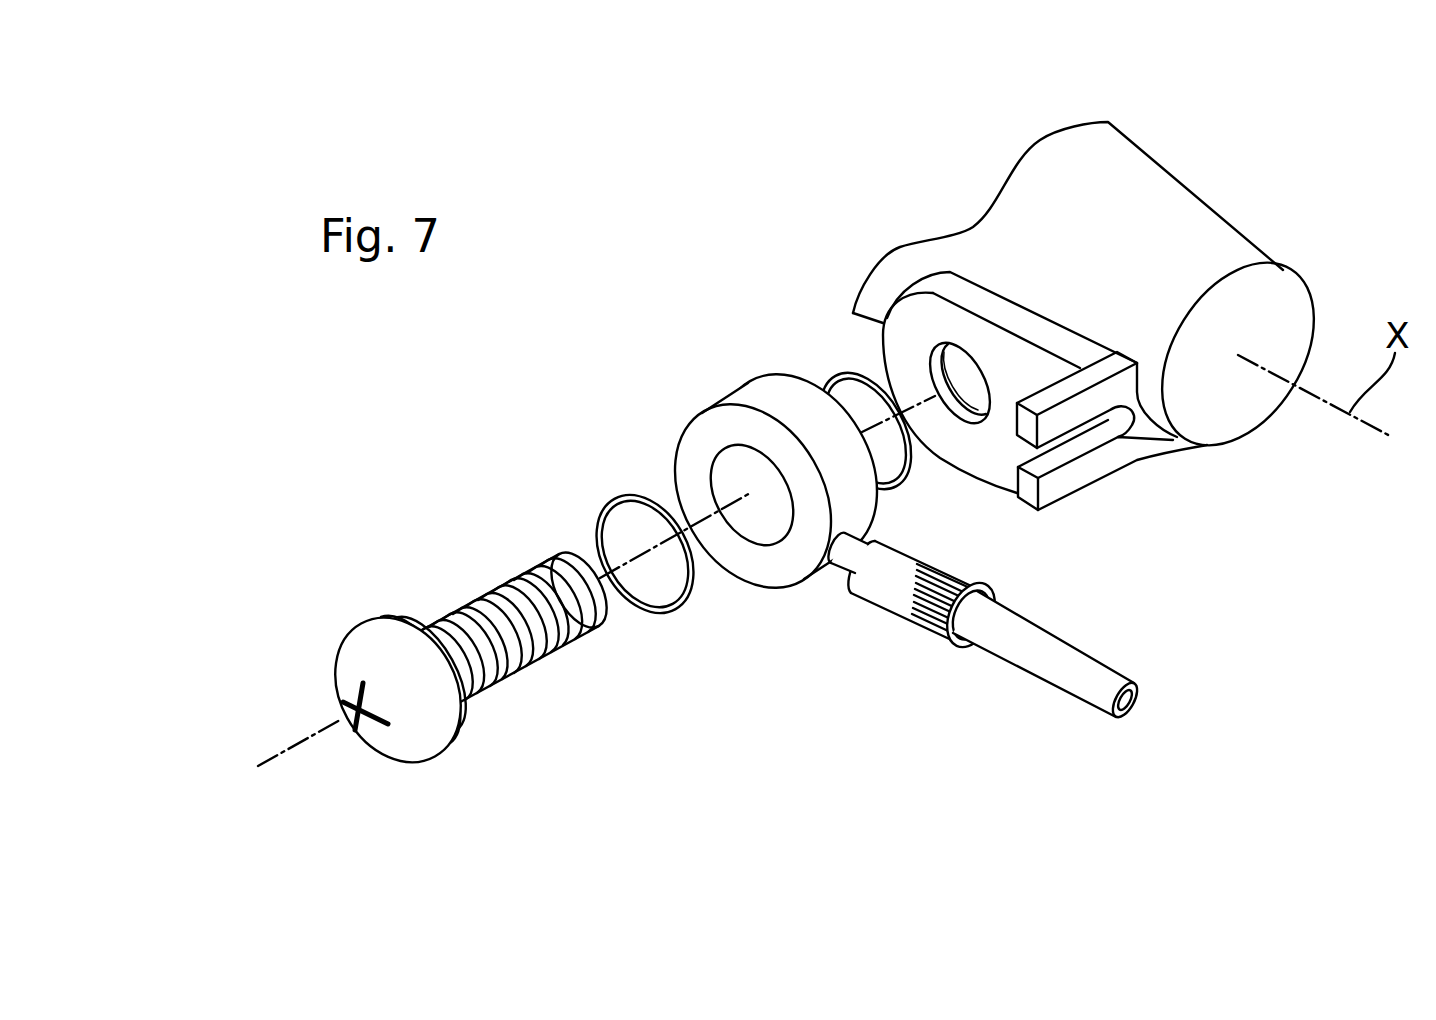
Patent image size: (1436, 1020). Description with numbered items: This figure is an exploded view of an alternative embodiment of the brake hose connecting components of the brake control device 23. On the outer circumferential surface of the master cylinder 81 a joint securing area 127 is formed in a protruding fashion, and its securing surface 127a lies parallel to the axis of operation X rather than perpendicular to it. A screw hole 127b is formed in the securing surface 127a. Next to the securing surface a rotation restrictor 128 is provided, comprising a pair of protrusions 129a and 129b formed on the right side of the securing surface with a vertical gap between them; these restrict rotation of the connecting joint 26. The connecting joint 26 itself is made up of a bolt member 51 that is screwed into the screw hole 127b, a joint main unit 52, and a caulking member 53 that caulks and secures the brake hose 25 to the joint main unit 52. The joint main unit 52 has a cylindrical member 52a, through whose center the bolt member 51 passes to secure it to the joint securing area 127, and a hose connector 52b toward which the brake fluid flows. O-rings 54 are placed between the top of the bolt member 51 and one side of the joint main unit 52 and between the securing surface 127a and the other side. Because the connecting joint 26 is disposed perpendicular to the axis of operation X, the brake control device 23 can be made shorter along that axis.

The brake control device 23 is at (1049, 294).
The master cylinder 81 is at (1193, 225).
The joint securing area 127 is at (916, 329).
The securing surface 127a is at (900, 343).
The screw hole 127b is at (965, 350).
The rotation restrictor 128 is at (1210, 457).
The protrusion 129a is at (1060, 418).
The protrusion 129b is at (1073, 478).
The connecting joint 26 is at (741, 509).
The joint main unit 52 is at (775, 509).
The cylindrical member 52a is at (758, 562).
The hose connector 52b is at (850, 552).
The O-ring 54 is at (612, 490).
The bolt member 51 is at (470, 603).
The caulking member 53 is at (905, 550).
The brake hose 25 is at (1068, 668).